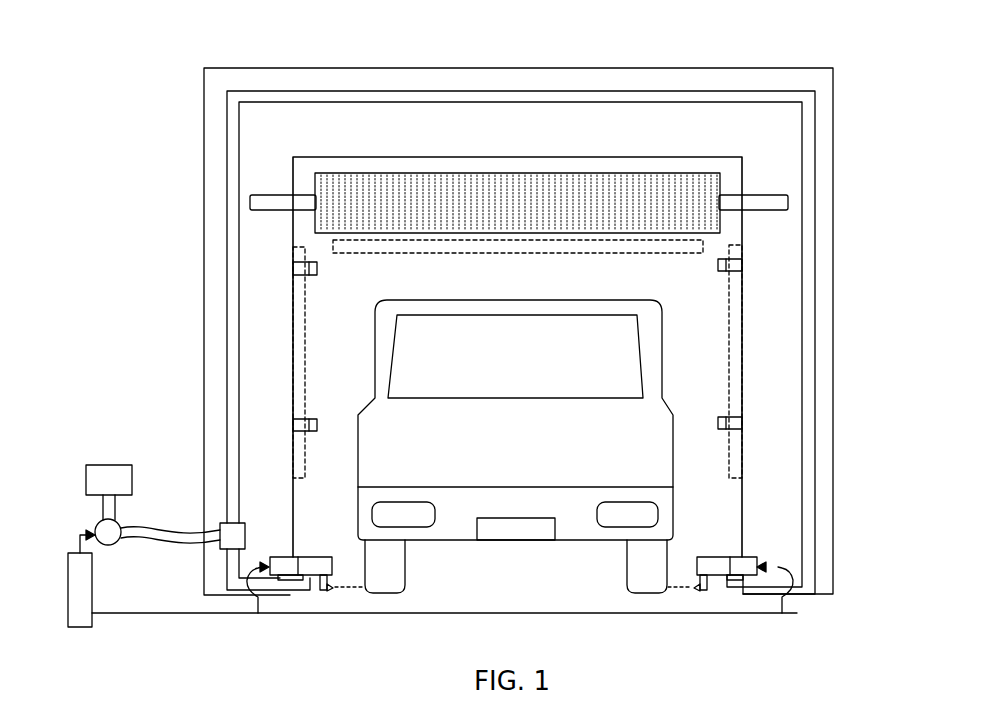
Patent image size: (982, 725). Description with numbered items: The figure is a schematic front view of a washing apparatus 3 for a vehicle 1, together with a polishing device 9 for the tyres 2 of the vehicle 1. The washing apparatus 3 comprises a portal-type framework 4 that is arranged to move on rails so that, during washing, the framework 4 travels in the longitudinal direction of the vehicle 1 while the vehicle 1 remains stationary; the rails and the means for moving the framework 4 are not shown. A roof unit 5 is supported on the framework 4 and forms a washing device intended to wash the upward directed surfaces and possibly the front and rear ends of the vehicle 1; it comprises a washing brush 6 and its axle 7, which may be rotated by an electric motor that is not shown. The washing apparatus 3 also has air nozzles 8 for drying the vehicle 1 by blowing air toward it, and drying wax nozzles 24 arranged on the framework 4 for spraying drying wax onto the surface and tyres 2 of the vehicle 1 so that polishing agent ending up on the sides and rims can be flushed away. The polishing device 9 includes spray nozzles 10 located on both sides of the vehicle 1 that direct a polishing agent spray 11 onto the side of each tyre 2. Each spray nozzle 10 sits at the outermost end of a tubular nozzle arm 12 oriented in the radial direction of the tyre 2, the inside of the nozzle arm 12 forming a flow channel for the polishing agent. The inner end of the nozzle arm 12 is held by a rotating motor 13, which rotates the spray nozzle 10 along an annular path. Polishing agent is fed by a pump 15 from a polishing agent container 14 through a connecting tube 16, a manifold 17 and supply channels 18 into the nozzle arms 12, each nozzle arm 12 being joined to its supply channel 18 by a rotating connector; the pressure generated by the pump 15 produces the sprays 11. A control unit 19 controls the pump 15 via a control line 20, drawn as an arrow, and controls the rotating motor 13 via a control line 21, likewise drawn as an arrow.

The vehicle 1 is at (513, 459).
The tyre 2 is at (388, 566).
The washing apparatus 3 is at (196, 39).
The framework 4 is at (645, 78).
The roof unit 5 is at (637, 154).
The washing brush 6 is at (483, 196).
The axle 7 is at (275, 206).
The air nozzles 8 is at (607, 250).
The polishing device 9 is at (238, 652).
The spray nozzles 10 is at (330, 591).
The polishing agent spray 11 is at (348, 568).
The nozzle arm 12 is at (312, 590).
The rotating motor 13 is at (283, 562).
The polishing agent container 14 is at (107, 475).
The pump 15 is at (110, 537).
The connecting tube 16 is at (145, 530).
The manifold 17 is at (238, 525).
The supply channels 18 is at (235, 377).
The control unit 19 is at (76, 617).
The control line 20 is at (78, 538).
The control line 21 is at (165, 615).
The drying wax nozzles 24 is at (317, 268).